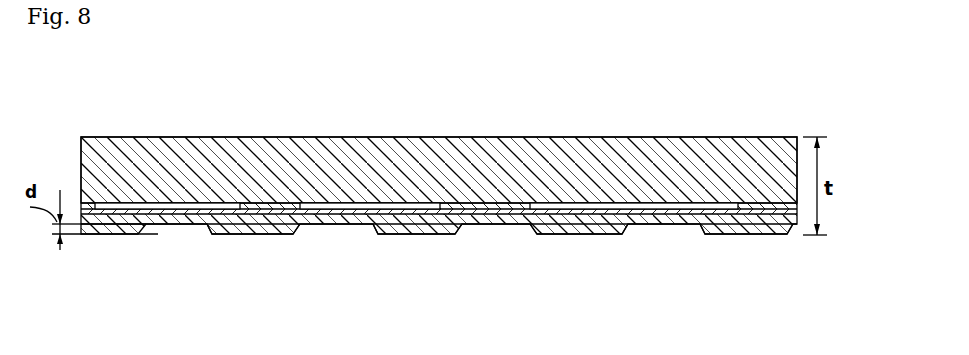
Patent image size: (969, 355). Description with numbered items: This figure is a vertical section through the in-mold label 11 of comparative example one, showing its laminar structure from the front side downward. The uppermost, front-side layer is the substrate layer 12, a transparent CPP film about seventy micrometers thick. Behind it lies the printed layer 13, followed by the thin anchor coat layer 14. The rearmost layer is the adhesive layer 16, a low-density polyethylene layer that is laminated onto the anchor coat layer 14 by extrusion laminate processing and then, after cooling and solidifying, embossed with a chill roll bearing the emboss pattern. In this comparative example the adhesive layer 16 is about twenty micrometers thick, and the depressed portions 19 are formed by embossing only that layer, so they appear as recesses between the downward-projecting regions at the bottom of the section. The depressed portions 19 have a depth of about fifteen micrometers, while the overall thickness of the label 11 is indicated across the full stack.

The label 11 is at (690, 115).
The substrate layer 12 is at (485, 163).
The printed layer 13 is at (213, 207).
The anchor coat layer 14 is at (270, 207).
The adhesive layer 16 is at (577, 222).
The depressed portion 19 is at (478, 224).